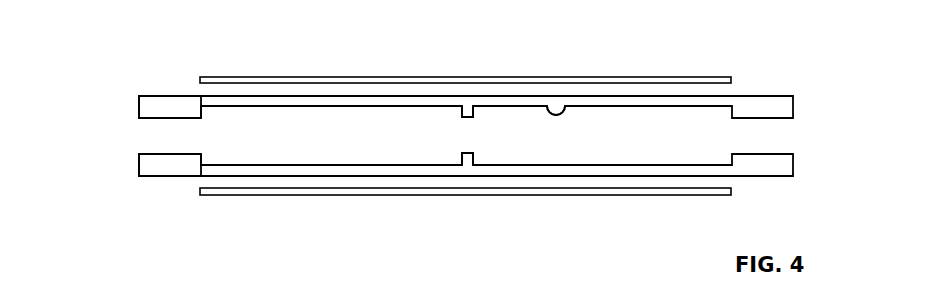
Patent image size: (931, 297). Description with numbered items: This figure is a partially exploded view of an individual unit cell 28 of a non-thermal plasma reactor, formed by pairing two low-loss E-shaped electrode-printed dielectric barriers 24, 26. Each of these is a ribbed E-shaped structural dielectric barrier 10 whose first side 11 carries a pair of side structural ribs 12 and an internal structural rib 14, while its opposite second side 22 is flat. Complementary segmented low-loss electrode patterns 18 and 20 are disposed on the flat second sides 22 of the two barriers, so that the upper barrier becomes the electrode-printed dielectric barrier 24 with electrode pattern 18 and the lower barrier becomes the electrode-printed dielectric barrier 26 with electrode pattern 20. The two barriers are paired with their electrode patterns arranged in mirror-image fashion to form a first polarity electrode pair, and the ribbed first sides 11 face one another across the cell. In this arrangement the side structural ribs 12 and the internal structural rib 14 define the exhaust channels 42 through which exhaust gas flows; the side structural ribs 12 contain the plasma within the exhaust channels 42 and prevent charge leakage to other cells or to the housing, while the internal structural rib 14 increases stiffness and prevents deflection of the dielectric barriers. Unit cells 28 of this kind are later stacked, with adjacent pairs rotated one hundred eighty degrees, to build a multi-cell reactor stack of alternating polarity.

The E-shaped structural dielectric barrier 10 is at (772, 95).
The first side 11 is at (563, 112).
The side structural ribs 12 is at (780, 118).
The internal structural rib 14 is at (468, 150).
The segmented low-loss electrode pattern 18 is at (705, 76).
The segmented low-loss electrode pattern 20 is at (638, 195).
The second side 22 is at (175, 96).
The low-loss E-shaped electrode-printed dielectric barrier 24 is at (143, 92).
The low-loss E-shaped electrode-printed dielectric barrier 26 is at (147, 179).
The individual unit cell 28 is at (528, 227).
The exhaust channels 42 is at (334, 148).